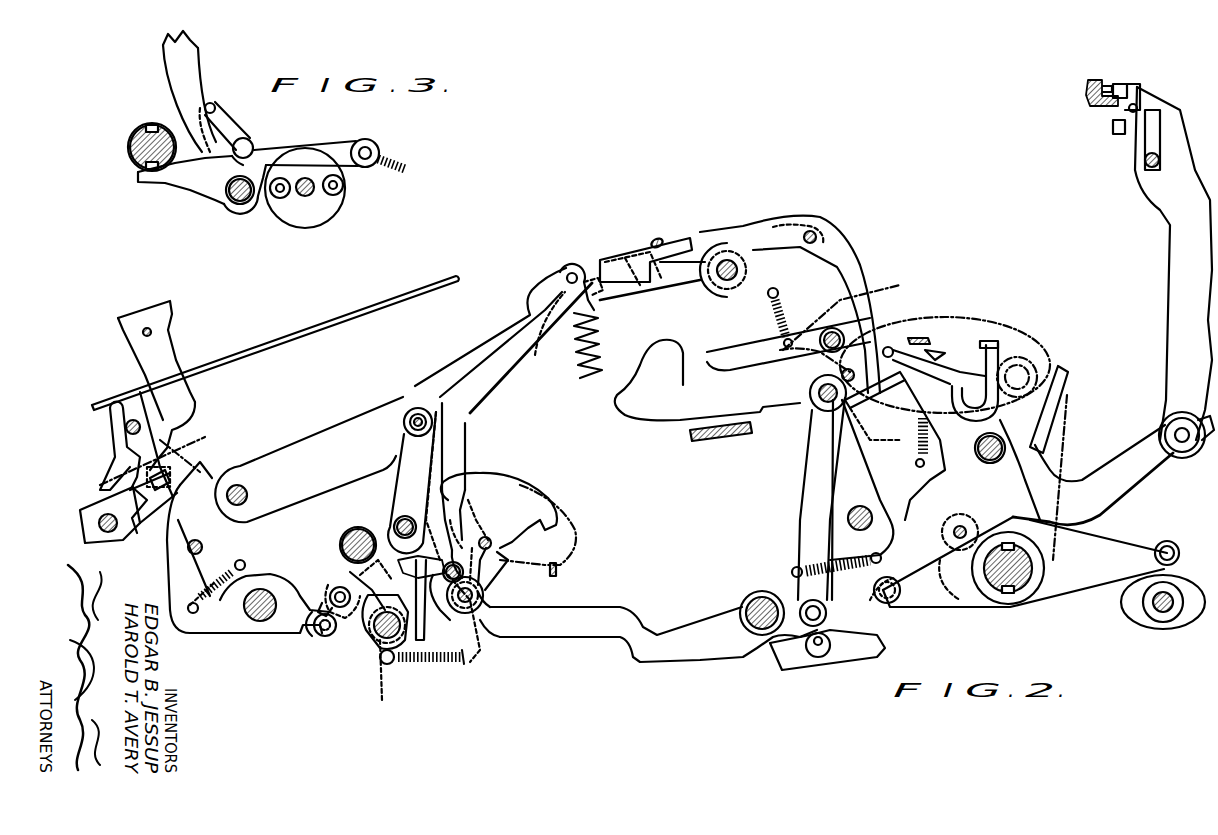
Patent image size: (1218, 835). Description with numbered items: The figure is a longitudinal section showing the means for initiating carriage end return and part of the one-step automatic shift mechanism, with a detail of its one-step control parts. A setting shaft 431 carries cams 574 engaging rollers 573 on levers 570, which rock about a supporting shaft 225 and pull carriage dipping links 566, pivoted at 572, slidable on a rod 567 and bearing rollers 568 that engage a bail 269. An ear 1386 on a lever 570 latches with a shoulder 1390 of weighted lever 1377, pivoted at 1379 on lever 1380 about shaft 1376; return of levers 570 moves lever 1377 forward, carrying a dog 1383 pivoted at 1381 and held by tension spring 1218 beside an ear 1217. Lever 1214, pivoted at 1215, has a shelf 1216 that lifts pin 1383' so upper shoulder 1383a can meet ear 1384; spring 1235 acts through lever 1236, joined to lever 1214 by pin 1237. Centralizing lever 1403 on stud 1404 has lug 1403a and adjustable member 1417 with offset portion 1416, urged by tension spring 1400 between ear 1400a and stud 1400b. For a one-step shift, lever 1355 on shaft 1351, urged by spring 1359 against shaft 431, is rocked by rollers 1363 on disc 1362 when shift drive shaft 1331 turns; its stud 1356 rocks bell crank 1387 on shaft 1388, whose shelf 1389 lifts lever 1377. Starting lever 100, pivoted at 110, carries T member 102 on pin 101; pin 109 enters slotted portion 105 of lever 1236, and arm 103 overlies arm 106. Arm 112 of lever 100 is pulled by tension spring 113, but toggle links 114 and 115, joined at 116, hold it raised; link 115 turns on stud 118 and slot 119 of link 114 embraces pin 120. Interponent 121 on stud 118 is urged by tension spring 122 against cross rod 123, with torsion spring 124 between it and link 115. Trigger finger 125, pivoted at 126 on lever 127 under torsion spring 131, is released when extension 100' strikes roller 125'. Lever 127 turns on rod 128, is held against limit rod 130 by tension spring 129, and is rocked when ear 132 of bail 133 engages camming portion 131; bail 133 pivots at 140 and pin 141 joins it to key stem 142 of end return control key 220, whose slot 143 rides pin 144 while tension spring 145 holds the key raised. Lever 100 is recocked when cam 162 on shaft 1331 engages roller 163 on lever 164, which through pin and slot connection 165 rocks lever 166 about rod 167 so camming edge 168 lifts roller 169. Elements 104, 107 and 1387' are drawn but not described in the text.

In FIG. 2, the starting lever 100 is at (309, 459).
In FIG. 2, the extension 100' is at (475, 631).
In FIG. 2, the pin 101 is at (470, 602).
In FIG. 2, the T member 102 is at (552, 510).
In FIG. 2, the arm 103 is at (466, 494).
In FIG. 2, the cam outline 104 is at (555, 530).
In FIG. 2, the slotted portion 105 is at (498, 570).
In FIG. 2, the arm 106 is at (480, 500).
In FIG. 2, the pin 107 is at (560, 574).
In FIG. 2, the pin 109 is at (492, 544).
In FIG. 2, the pivot 110 is at (238, 484).
In FIG. 2, the rearwardly extending arm 112 is at (552, 286).
In FIG. 2, the tension spring 113 is at (596, 340).
In FIG. 2, the upper link 114 is at (396, 478).
In FIG. 2, the lower link 115 is at (428, 620).
In FIG. 2, the pivot pin 116 is at (396, 524).
In FIG. 2, the stud 118 is at (378, 638).
In FIG. 2, the elongated slot 119 is at (418, 412).
In FIG. 2, the pin 120 is at (404, 412).
In FIG. 2, the interponent 121 is at (352, 572).
In FIG. 2, the tension spring 122 is at (416, 662).
In FIG. 2, the stationary cross rod 123 is at (344, 540).
In FIG. 2, the torsion spring 124 is at (392, 672).
In FIG. 2, the trigger finger 125 is at (334, 584).
In FIG. 2, the roller 125' is at (312, 591).
In FIG. 2, the pivot 126 is at (322, 638).
In FIG. 2, the lever 127 is at (240, 628).
In FIG. 2, the rod 128 is at (262, 588).
In FIG. 2, the tension spring 129 is at (238, 566).
In FIG. 2, the limit rod 130 is at (200, 542).
In FIG. 2, the torsion spring 131 is at (176, 490).
In FIG. 2, the ear 132 is at (172, 460).
In FIG. 2, the bail 133 is at (128, 545).
In FIG. 2, the pivot 140 is at (100, 540).
In FIG. 2, the pin 141 is at (212, 458).
In FIG. 2, the key stem 142 is at (197, 400).
In FIG. 2, the elongated slot 143 is at (112, 424).
In FIG. 2, the stationary pin 144 is at (126, 432).
In FIG. 2, the tension spring 145 is at (112, 460).
In FIG. 2, the cam 162 is at (1128, 606).
In FIG. 2, the cam follower roller 163 is at (1172, 546).
In FIG. 2, the lever 164 is at (1110, 548).
In FIG. 2, the pin and slot connection 165 is at (890, 604).
In FIG. 2, the second lever 166 is at (706, 620).
In FIG. 2, the stationary rod 167 is at (762, 590).
In FIG. 2, the camming edge 168 is at (510, 607).
In FIG. 2, the roller 169 is at (448, 560).
In FIG. 2, the end return control key 220 is at (175, 305).
In FIG. 2, the supporting shaft 225 is at (988, 466).
In FIG. 2, the bail 269 is at (1096, 80).
In FIG. 3, the setting shaft 431 is at (152, 124).
In FIG. 2, the setting shaft 431 is at (1010, 595).
In FIG. 2, the carriage dipping links 566 is at (1170, 296).
In FIG. 2, the rod 567 is at (1148, 168).
In FIG. 2, the rollers 568 is at (1122, 136).
In FIG. 2, the levers 570 is at (1040, 462).
In FIG. 2, the pivotal connection 572 is at (1170, 430).
In FIG. 2, the cam follower rollers 573 is at (944, 530).
In FIG. 2, the cams 574 is at (960, 608).
In FIG. 2, the lever 1214 is at (846, 268).
In FIG. 2, the pivot 1215 is at (728, 258).
In FIG. 2, the shelf 1216 is at (915, 348).
In FIG. 2, the ear 1217 is at (865, 438).
In FIG. 2, the tension spring 1218 is at (778, 316).
In FIG. 2, the spring 1235 is at (656, 240).
In FIG. 2, the lever 1236 is at (500, 346).
In FIG. 2, the pin 1237 is at (814, 232).
In FIG. 3, the shift drive shaft 1331 is at (303, 196).
In FIG. 2, the shift drive shaft 1331 is at (1160, 612).
In FIG. 3, the shaft 1351 is at (238, 202).
In FIG. 3, the lever 1355 is at (200, 186).
In FIG. 3, the stud 1356 is at (248, 140).
In FIG. 3, the spring 1359 is at (392, 150).
In FIG. 3, the disc 1362 is at (336, 212).
In FIG. 3, the rollers 1363 is at (344, 190).
In FIG. 2, the shaft 1376 is at (904, 502).
In FIG. 2, the lever 1377 is at (698, 364).
In FIG. 2, the pivot 1379 is at (856, 392).
In FIG. 2, the lever 1380 is at (922, 442).
In FIG. 2, the pivot 1381 is at (830, 330).
In FIG. 2, the dog 1383 is at (901, 322).
In FIG. 2, the pin 1383' is at (929, 303).
In FIG. 2, the upper shoulder 1383a is at (930, 346).
In FIG. 2, the ear 1384 is at (925, 338).
In FIG. 2, the ear 1386 is at (992, 342).
In FIG. 3, the bell crank 1387 is at (205, 91).
In FIG. 2, the line 1387' is at (1083, 471).
In FIG. 2, the shaft 1388 is at (1040, 362).
In FIG. 2, the shelf 1389 is at (692, 438).
In FIG. 2, the shoulder 1390 is at (1000, 350).
In FIG. 2, the tension spring 1400 is at (880, 552).
In FIG. 2, the ear 1400a is at (796, 568).
In FIG. 2, the stud 1400b is at (882, 560).
In FIG. 2, the centralizing lever 1403 is at (804, 528).
In FIG. 2, the lug 1403a is at (830, 487).
In FIG. 2, the stud 1404 is at (818, 404).
In FIG. 2, the offset portion 1416 is at (858, 636).
In FIG. 2, the adjustable member 1417 is at (836, 652).